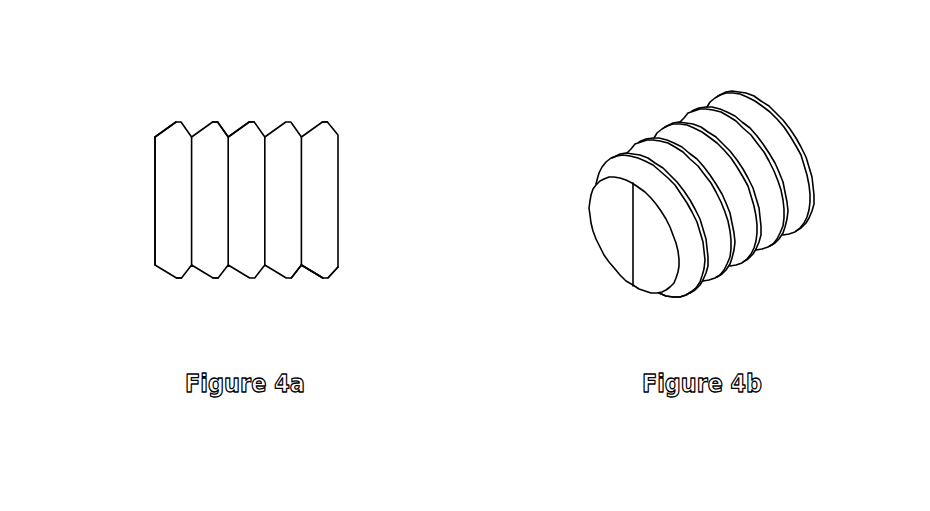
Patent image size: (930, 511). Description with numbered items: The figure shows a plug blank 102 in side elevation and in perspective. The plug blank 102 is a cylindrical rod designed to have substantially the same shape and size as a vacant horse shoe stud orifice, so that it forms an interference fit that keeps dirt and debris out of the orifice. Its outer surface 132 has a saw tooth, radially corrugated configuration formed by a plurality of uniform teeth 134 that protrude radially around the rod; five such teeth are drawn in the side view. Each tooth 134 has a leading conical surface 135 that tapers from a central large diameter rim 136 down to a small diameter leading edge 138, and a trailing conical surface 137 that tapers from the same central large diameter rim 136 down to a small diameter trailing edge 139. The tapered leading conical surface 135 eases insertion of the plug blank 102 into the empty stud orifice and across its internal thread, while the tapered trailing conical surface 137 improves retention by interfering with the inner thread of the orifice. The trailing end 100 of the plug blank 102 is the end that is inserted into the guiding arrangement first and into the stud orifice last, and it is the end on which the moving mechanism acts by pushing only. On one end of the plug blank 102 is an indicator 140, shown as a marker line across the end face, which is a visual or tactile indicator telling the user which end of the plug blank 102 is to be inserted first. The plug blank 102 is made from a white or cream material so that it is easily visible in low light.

In FIG. 4A, the trailing end 100 is at (338, 200).
In FIG. 4A, the plug blank 102 is at (140, 138).
In FIG. 4B, the plug blank 102 is at (573, 148).
In FIG. 4A, the saw tooth configuration outer surface 132 is at (253, 122).
In FIG. 4B, the saw tooth configuration outer surface 132 is at (642, 141).
In FIG. 4A, the teeth 134 is at (215, 278).
In FIG. 4A, the leading conical surface 135 is at (166, 129).
In FIG. 4B, the leading conical surface 135 is at (633, 165).
In FIG. 4A, the central large diameter rim 136 is at (327, 122).
In FIG. 4B, the central large diameter rim 136 is at (688, 294).
In FIG. 4A, the trailing conical surface 137 is at (262, 320).
In FIG. 4A, the small diameter leading edge 138 is at (230, 136).
In FIG. 4A, the small diameter trailing edge 139 is at (302, 265).
In FIG. 4B, the indicator 140 is at (632, 236).